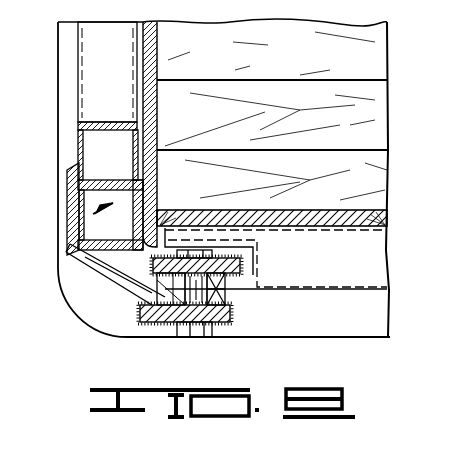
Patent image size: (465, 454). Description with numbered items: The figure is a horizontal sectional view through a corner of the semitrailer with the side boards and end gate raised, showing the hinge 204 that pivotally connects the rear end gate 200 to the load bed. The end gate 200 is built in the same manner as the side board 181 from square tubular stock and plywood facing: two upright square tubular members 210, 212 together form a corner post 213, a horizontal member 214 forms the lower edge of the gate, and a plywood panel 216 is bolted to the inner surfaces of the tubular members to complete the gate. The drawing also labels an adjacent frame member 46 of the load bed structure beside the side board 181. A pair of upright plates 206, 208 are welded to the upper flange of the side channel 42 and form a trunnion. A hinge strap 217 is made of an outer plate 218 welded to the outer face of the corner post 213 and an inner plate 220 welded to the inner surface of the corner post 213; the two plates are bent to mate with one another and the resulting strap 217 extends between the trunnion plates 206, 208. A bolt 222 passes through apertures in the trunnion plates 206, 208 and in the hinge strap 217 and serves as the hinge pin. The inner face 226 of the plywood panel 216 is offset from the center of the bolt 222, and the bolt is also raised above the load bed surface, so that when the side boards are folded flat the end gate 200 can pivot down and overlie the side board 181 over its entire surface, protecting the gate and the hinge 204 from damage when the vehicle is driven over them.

The side channel 42 is at (346, 325).
The wooden sash frame member 46 is at (370, 113).
The side board 181 is at (358, 271).
The rear end gate 200 is at (64, 65).
The hinge 204 is at (203, 342).
The upright plate 206 is at (240, 261).
The upright plate 208 is at (237, 313).
The square tubular member 210 is at (70, 202).
The square tubular member 212 is at (77, 141).
The corner post 213 is at (73, 223).
The horizontal member 214 is at (92, 42).
The plywood panel 216 is at (148, 115).
The hinge strap 217 is at (88, 294).
The outer plate 218 is at (80, 256).
The inner plate 220 is at (147, 194).
The bolt 222 is at (185, 338).
The inner face 226 is at (157, 72).